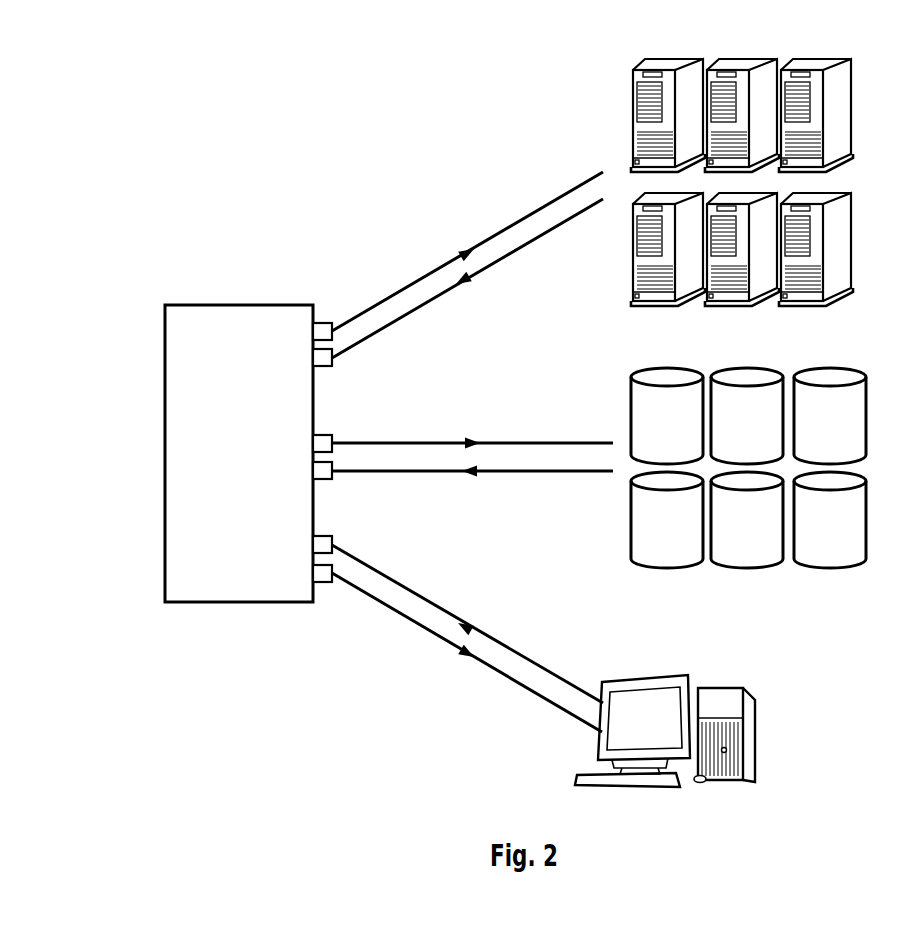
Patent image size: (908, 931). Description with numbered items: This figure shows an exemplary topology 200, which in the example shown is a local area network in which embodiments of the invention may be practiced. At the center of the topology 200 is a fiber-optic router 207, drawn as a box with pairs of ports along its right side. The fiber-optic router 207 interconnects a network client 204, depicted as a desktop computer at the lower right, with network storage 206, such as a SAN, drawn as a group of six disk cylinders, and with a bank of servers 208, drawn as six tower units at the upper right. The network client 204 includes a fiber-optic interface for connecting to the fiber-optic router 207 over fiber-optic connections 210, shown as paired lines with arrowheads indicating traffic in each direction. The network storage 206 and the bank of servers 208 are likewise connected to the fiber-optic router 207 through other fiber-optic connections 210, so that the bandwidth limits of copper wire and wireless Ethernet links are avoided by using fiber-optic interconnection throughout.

The topology 200 is at (205, 140).
The network client 204 is at (758, 742).
The network storage 206 is at (868, 573).
The fiber-optic router 207 is at (237, 305).
The bank of servers 208 is at (868, 58).
The fiber-optic connections 210 is at (472, 453).